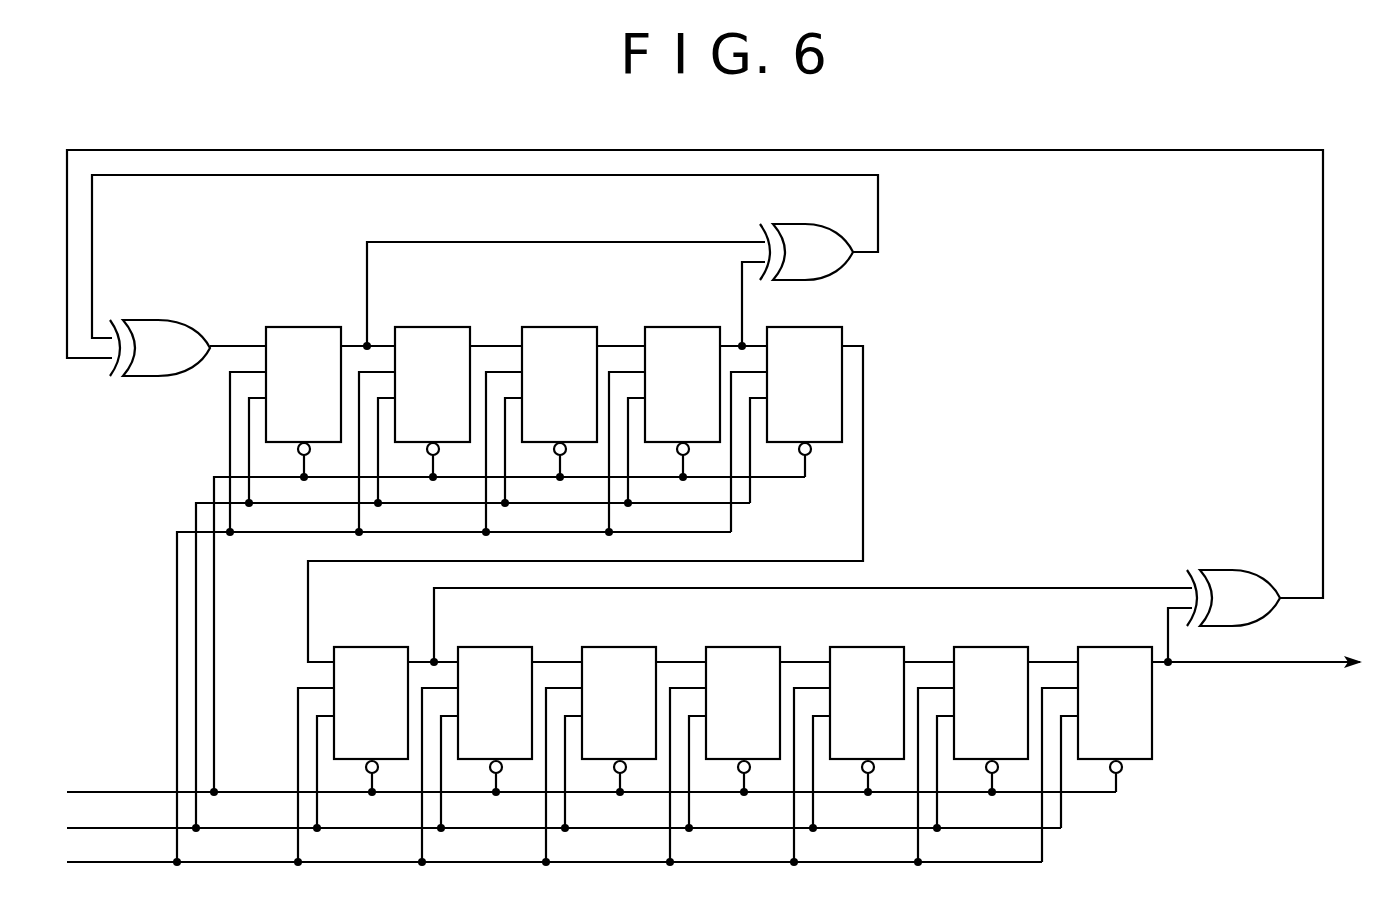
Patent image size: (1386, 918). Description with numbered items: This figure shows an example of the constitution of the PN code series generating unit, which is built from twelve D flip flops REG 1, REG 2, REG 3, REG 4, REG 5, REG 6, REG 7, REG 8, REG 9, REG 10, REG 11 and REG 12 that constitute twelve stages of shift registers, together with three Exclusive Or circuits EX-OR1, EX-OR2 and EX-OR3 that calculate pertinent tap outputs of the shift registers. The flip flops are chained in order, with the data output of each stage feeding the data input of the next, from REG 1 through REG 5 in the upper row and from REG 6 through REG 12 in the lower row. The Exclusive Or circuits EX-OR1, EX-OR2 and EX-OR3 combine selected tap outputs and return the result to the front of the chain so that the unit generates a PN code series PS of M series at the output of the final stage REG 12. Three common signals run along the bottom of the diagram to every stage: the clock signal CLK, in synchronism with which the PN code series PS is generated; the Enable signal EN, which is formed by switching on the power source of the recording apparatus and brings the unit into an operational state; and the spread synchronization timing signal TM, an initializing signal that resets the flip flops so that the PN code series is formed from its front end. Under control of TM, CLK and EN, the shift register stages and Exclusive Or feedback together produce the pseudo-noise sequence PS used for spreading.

The D flip flop REG 1 is at (290, 327).
The D flip flop REG 2 is at (420, 327).
The D flip flop REG 3 is at (548, 327).
The D flip flop REG 4 is at (668, 327).
The D flip flop REG 5 is at (790, 327).
The D flip flop REG 6 is at (360, 647).
The D flip flop REG 7 is at (484, 647).
The D flip flop REG 8 is at (608, 647).
The D flip flop REG 9 is at (732, 647).
The D flip flop REG 10 is at (856, 647).
The D flip flop REG 11 is at (980, 647).
The D flip flop REG 12 is at (1104, 647).
The Exclusive Or circuit EX-OR1 is at (157, 320).
The Exclusive Or circuit EX-OR2 is at (800, 223).
The Exclusive Or circuit EX-OR3 is at (1232, 570).
The spread synchronization timing signal TM is at (591, 634).
The clock signal CLK is at (564, 665).
The Enable signal EN is at (554, 697).
The PN code series PS is at (1257, 647).